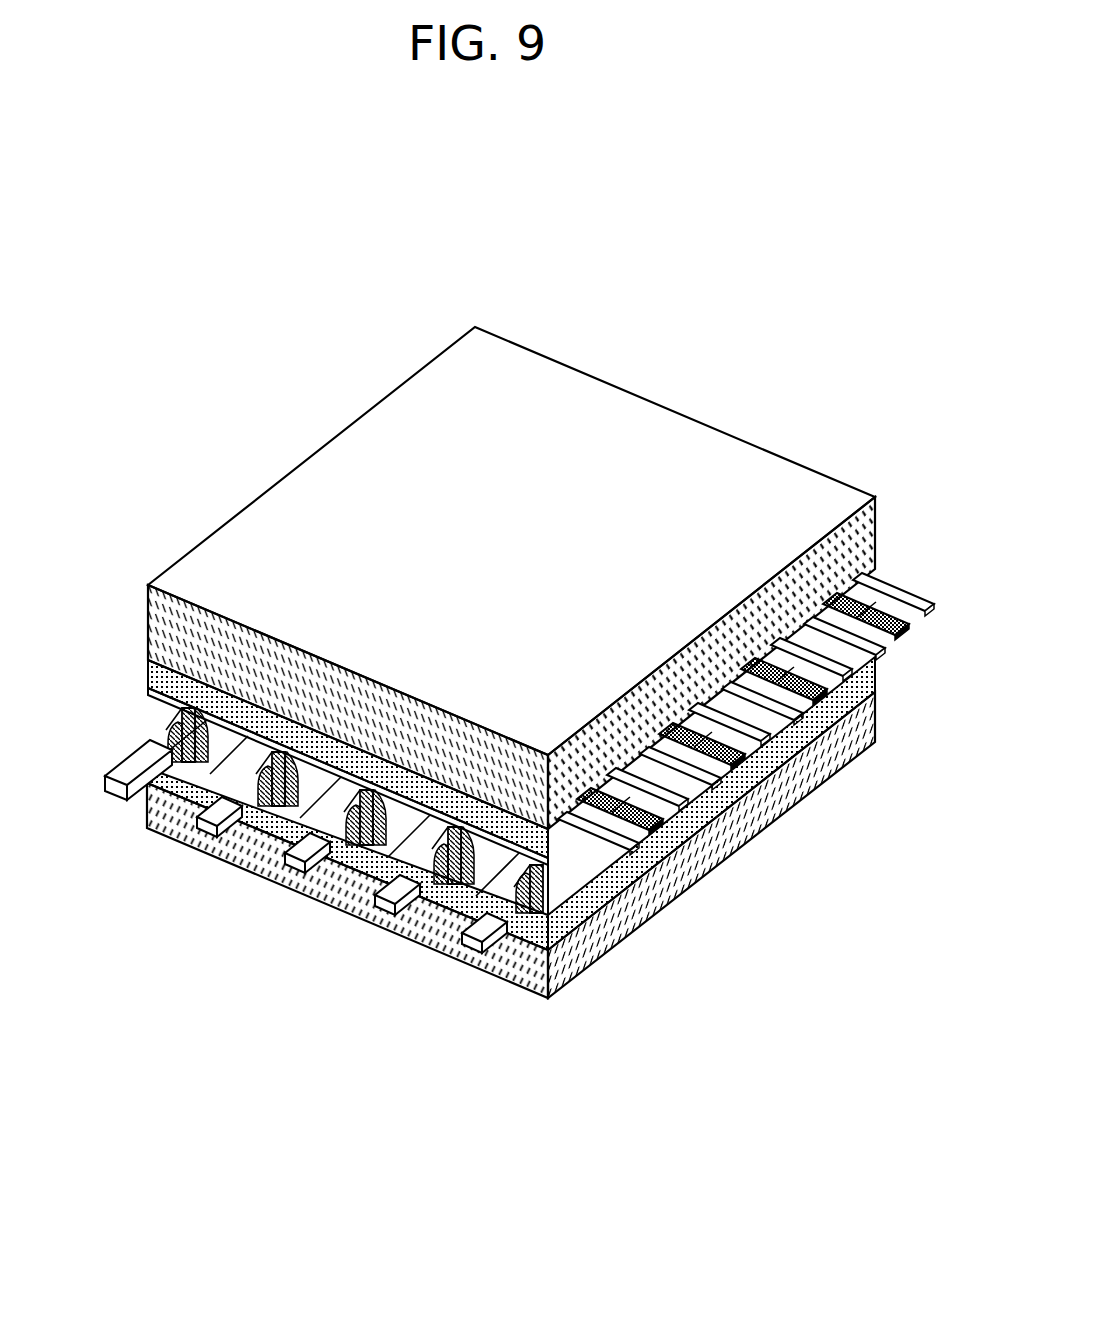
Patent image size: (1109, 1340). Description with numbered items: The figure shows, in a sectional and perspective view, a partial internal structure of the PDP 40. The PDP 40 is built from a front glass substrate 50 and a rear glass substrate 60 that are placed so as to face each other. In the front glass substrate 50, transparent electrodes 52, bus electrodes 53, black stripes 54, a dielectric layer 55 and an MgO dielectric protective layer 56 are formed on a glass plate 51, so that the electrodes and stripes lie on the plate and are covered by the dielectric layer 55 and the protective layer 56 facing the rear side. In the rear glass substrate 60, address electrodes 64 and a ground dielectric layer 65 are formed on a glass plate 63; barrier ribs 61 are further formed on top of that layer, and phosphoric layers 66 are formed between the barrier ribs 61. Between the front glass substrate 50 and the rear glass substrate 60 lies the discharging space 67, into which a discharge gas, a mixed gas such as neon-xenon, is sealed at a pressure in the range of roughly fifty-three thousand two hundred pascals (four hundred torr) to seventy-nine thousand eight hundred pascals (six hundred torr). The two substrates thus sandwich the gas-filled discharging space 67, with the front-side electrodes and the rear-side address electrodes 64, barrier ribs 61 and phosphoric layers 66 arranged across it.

The PDP 40 is at (243, 478).
The front glass substrate 50 is at (955, 272).
The glass plate 51 is at (328, 540).
The transparent electrodes 52 is at (640, 792).
The bus electrodes 53 is at (670, 797).
The black stripes 54 is at (728, 722).
The dielectric layer 55 is at (323, 743).
The MgO dielectric protective layer 56 is at (350, 767).
The rear glass substrate 60 is at (83, 1078).
The barrier ribs 61 is at (447, 880).
The glass plate 63 is at (235, 862).
The address electrodes 64 is at (308, 873).
The ground dielectric layer 65 is at (355, 868).
The phosphoric layers 66 is at (517, 905).
The discharging space 67 is at (150, 828).